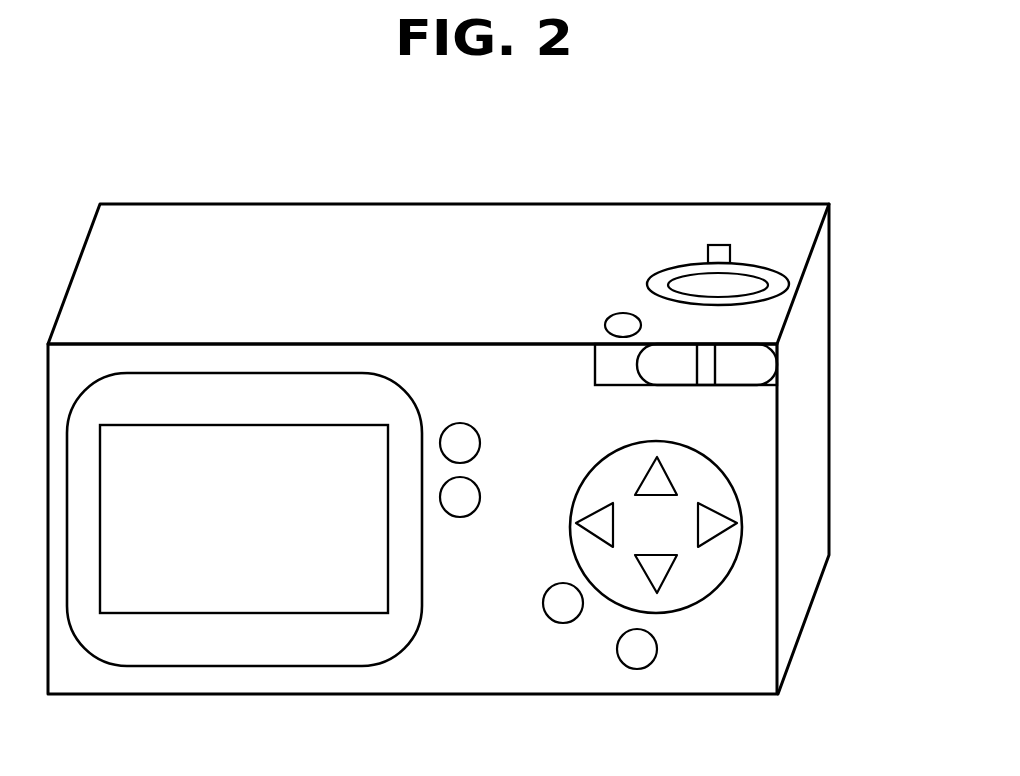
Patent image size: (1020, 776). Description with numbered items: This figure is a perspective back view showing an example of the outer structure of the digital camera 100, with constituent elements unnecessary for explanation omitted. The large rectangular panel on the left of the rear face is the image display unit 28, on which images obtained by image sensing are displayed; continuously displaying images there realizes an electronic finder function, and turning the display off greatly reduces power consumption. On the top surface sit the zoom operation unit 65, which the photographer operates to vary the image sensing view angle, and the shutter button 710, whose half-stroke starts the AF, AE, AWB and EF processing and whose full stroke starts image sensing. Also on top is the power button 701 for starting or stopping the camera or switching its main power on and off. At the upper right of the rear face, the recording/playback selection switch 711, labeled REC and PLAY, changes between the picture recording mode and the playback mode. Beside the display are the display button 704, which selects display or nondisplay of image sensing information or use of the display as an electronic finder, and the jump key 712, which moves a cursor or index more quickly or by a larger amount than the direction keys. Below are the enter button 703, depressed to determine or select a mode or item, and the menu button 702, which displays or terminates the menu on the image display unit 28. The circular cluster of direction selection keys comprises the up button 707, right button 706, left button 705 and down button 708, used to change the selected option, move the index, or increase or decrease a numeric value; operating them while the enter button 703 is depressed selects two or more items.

The digital camera 100 is at (800, 578).
The image display unit 28 is at (237, 593).
The zoom operation unit 65 is at (718, 245).
The shutter button 710 is at (748, 277).
The power button 701 is at (620, 323).
The recording/playback selection switch 711 is at (717, 362).
The display button 704 is at (455, 432).
The jump key 712 is at (467, 505).
The enter button 703 is at (557, 612).
The menu button 702 is at (637, 655).
The up button 707 is at (660, 478).
The right button 706 is at (718, 521).
The left button 705 is at (608, 522).
The down button 708 is at (660, 573).